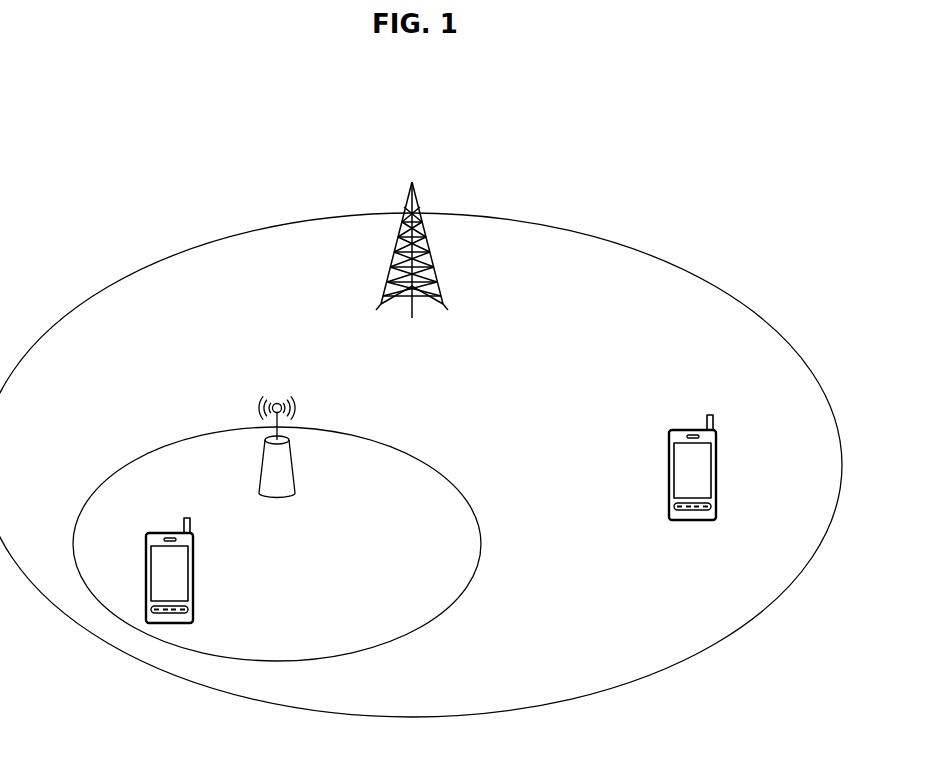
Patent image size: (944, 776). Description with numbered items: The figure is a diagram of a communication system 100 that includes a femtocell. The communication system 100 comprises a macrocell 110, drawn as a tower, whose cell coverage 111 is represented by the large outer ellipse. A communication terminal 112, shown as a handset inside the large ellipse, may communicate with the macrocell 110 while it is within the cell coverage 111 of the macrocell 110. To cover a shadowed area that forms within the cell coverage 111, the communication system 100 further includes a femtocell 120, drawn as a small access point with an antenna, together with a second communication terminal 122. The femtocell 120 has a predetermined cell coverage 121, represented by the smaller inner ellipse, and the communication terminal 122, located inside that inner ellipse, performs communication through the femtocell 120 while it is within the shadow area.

The communication system 100 is at (161, 180).
The macrocell 110 is at (443, 282).
The cell coverage 111 is at (678, 265).
The communication terminal 112 is at (717, 473).
The femtocell 120 is at (274, 404).
The cell coverage 121 is at (438, 470).
The communication terminal 122 is at (194, 577).